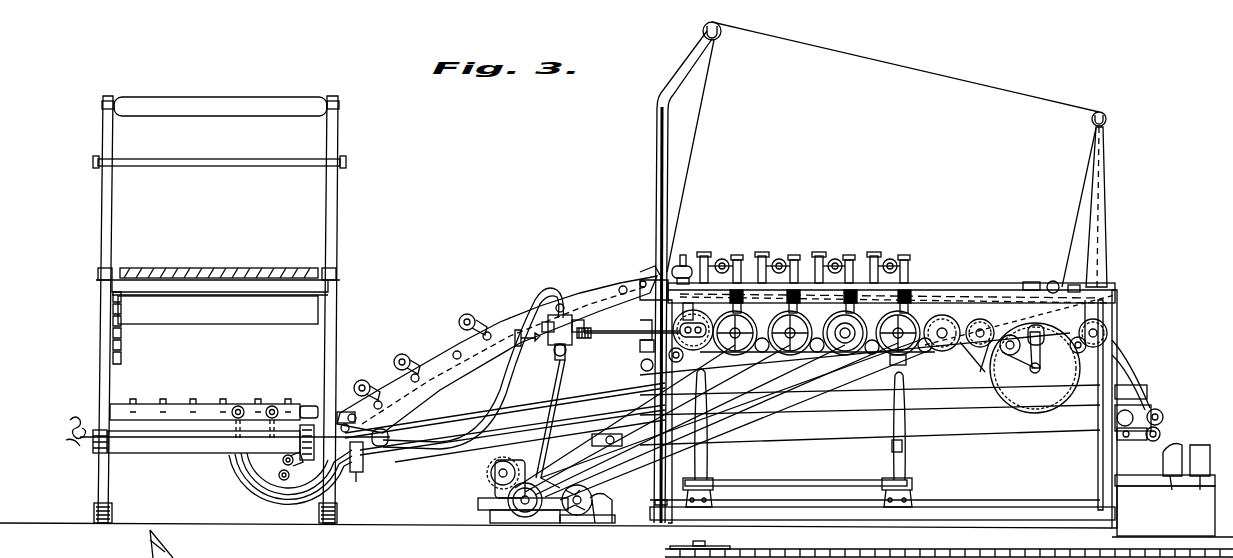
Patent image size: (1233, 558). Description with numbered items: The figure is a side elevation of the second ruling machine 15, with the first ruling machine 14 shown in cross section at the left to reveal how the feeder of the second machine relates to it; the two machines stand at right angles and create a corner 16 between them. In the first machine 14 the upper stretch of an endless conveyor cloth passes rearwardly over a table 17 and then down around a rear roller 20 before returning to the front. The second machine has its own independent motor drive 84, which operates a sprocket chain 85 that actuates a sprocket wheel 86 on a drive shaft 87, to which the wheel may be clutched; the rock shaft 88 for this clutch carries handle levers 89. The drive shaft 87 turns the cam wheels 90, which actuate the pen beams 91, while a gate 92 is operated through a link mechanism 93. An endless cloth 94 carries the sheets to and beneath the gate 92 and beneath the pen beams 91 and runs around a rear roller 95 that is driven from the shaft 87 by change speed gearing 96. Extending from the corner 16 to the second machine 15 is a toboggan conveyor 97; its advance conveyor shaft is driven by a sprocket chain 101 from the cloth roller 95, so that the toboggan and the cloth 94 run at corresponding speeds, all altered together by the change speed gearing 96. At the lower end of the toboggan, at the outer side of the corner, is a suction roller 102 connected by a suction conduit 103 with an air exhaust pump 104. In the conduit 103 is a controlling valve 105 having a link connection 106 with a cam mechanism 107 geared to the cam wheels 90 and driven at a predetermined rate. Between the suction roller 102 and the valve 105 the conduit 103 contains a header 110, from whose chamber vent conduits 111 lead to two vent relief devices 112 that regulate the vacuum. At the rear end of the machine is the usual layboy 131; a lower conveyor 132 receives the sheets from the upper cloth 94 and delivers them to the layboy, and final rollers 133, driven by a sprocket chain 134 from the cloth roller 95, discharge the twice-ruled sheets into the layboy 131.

The first ruling machine 14 is at (97, 288).
The second ruling machine 15 is at (832, 190).
The corner 16 is at (245, 386).
The table 17 is at (232, 268).
The rear roller 20 is at (162, 318).
The motor drive 84 is at (527, 512).
The sprocket chain 85 is at (575, 438).
The sprocket wheel 86 is at (956, 290).
The drive shaft 87 is at (908, 355).
The rock shaft 88 is at (828, 474).
The handle levers 89 is at (895, 430).
The cam wheels 90 is at (772, 360).
The pen beams 91 is at (780, 262).
The gate 92 is at (697, 272).
The link mechanism 93 is at (722, 260).
The endless cloth 94 is at (966, 288).
The rear roller 95 is at (1115, 315).
The change speed gearing 96 is at (960, 350).
The toboggan conveyor 97 is at (496, 328).
The sprocket chain 101 is at (449, 424).
The suction roller 102 is at (262, 470).
The suction conduit 103 is at (300, 470).
The air exhaust pump 104 is at (578, 514).
The controlling valve 105 is at (567, 340).
The link connection 106 is at (622, 326).
The cam mechanism 107 is at (694, 345).
The header 110 is at (355, 470).
The vent conduits 111 is at (282, 480).
The vent relief devices 112 is at (240, 405).
The layboy 131 is at (1135, 488).
The lower conveyor 132 is at (1003, 412).
The final rollers 133 is at (1162, 432).
The sprocket chain 134 is at (1140, 385).